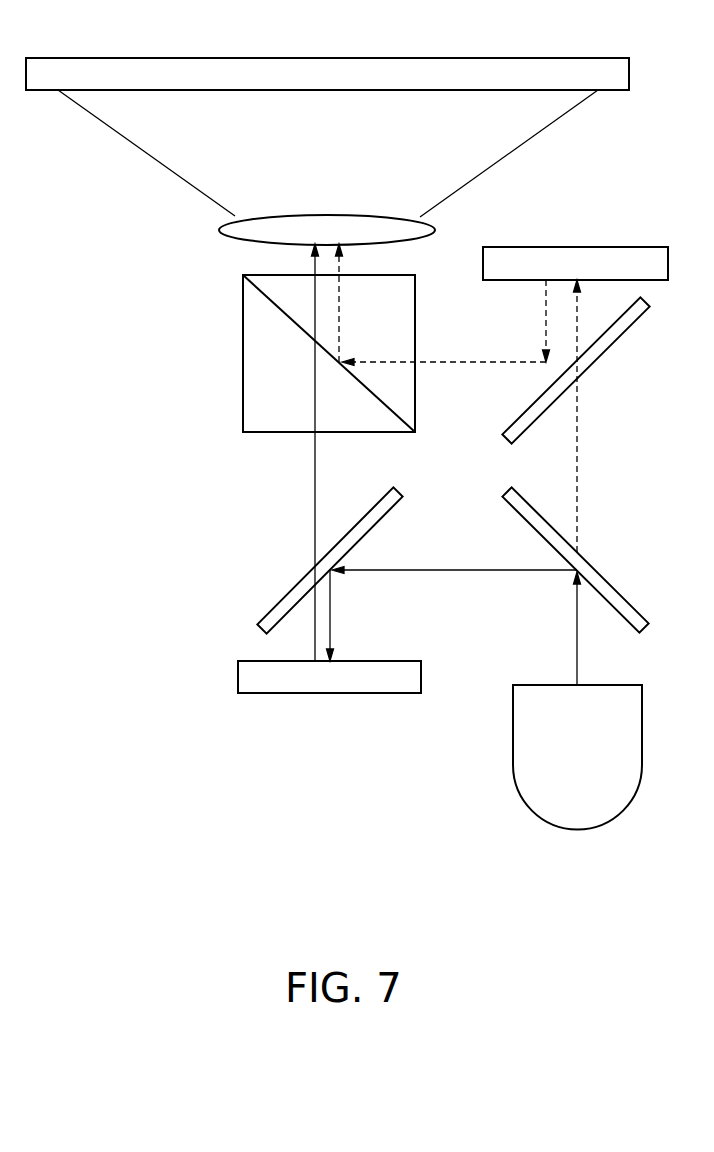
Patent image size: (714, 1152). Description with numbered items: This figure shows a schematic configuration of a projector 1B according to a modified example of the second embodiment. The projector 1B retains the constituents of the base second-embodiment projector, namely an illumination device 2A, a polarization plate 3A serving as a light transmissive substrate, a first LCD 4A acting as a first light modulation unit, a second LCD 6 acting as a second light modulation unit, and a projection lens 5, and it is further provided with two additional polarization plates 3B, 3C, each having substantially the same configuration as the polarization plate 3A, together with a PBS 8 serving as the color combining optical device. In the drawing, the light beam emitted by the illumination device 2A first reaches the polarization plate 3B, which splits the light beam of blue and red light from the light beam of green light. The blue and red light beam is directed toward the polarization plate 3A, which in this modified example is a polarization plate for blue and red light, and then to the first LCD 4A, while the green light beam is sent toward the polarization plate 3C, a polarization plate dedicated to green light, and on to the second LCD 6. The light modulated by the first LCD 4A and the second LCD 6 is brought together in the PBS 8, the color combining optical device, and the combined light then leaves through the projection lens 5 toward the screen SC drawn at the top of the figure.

The screen SC is at (58, 67).
The projection lens 5 is at (435, 223).
The second LCD 6 is at (622, 247).
The PBS 8 is at (243, 365).
The polarization plate 3C is at (618, 341).
The polarization plate 3A is at (289, 588).
The polarization plate 3B is at (617, 586).
The first LCD 4A is at (238, 673).
The illumination device 2A is at (620, 808).
The projector 1B is at (170, 785).